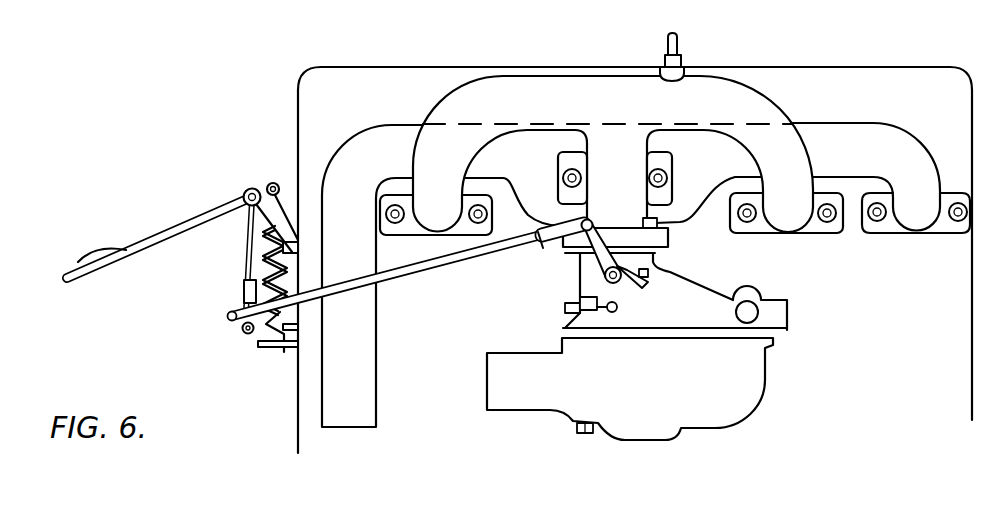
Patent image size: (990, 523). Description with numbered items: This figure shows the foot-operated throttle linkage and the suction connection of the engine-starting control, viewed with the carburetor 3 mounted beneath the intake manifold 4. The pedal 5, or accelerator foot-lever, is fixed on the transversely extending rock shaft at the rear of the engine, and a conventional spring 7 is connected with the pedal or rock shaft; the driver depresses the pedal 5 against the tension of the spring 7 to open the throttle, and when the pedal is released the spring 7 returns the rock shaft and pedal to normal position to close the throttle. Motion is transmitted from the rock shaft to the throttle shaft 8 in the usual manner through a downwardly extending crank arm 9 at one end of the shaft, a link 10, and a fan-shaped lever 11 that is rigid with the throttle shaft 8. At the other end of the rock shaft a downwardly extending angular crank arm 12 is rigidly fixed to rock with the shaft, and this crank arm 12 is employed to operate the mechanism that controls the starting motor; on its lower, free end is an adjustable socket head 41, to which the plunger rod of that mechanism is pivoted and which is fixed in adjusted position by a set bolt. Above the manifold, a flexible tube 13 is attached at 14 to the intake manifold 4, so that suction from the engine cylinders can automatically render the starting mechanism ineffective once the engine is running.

The carburetor 3 is at (648, 272).
The intake manifold 4 is at (613, 154).
The pedal 5 is at (78, 258).
The spring 7 is at (259, 262).
The throttle shaft 8 is at (605, 279).
The crank arm 9 is at (222, 306).
The link 10 is at (450, 260).
The lever 11 is at (630, 283).
The crank arm 12 is at (232, 277).
The flexible tube 13 is at (668, 37).
The attachment point 14 is at (690, 66).
The adjustable socket head 41 is at (244, 327).